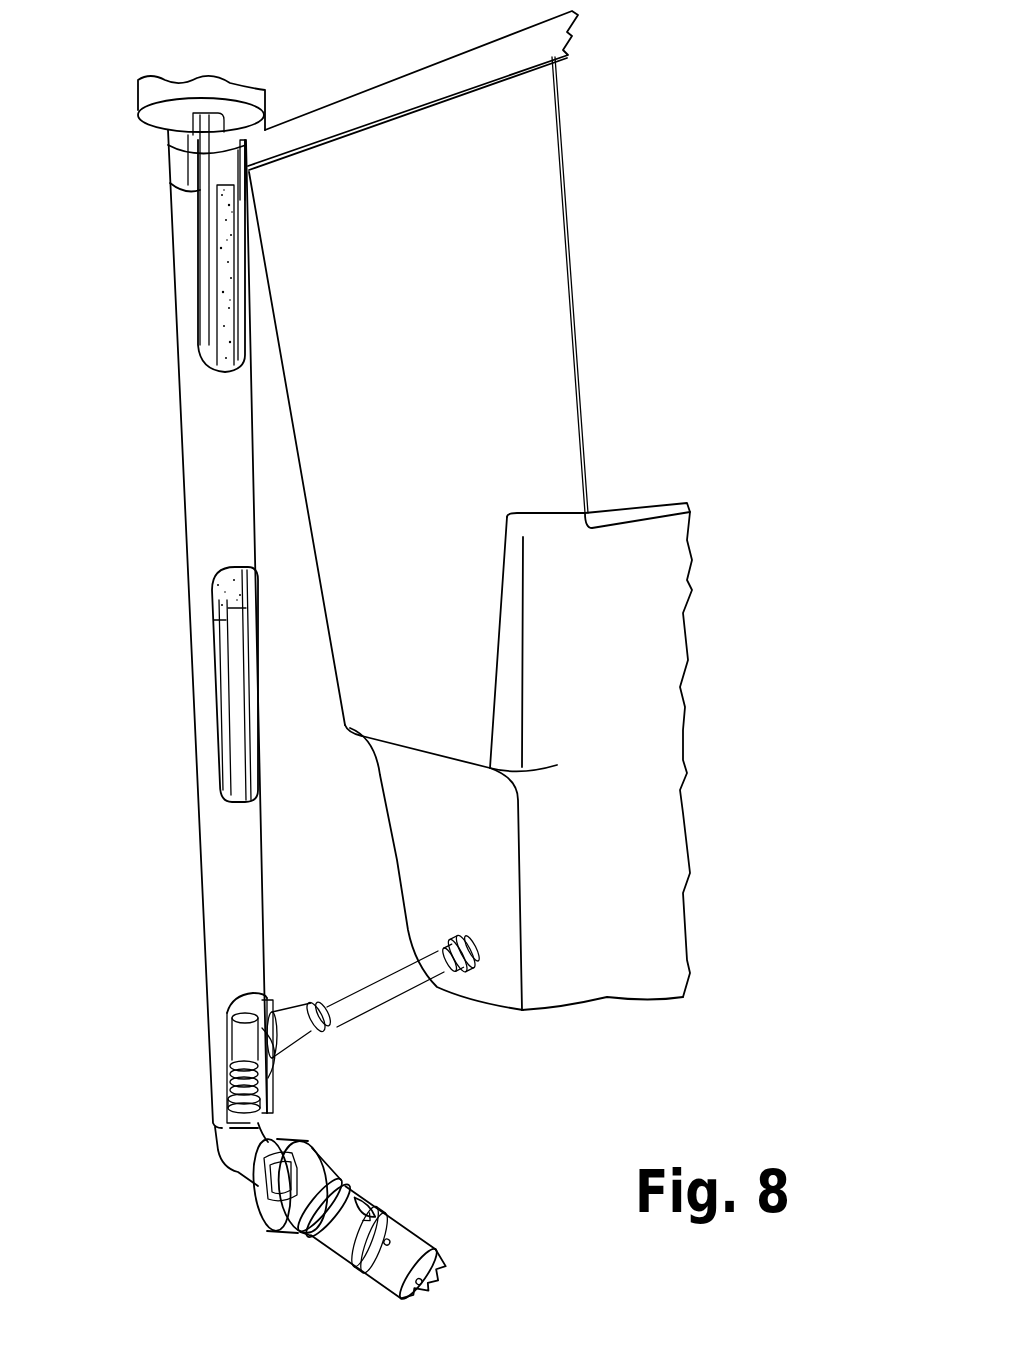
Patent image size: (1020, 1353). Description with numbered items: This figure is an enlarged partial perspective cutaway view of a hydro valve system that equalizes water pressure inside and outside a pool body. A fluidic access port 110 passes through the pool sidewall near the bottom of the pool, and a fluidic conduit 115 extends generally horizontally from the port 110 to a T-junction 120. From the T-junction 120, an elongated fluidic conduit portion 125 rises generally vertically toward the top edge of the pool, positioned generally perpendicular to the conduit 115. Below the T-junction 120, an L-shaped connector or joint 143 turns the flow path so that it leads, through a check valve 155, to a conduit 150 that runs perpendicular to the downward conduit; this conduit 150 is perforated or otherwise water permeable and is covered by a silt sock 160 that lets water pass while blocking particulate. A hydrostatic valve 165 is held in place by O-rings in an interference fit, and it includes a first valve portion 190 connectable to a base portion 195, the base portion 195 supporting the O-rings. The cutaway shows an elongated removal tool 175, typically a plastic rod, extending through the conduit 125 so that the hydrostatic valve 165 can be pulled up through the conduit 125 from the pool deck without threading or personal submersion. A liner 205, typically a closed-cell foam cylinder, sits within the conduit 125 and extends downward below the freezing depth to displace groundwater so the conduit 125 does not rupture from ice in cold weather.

The fluidic access port 110 is at (443, 943).
The fluidic conduit 115 is at (386, 993).
The T-junction 120 is at (213, 1047).
The elongated fluidic conduit portion 125 is at (200, 468).
The elbow 143 is at (225, 1136).
The conduit 150 is at (403, 1243).
The check valve 155 is at (267, 1200).
The silt sock 160 is at (340, 1243).
The hydrostatic valve 165 is at (310, 1060).
The elongated removal tool 175 is at (227, 662).
The first valve portion 190 is at (243, 1066).
The base portion 195 is at (240, 1105).
The liner 205 is at (220, 258).